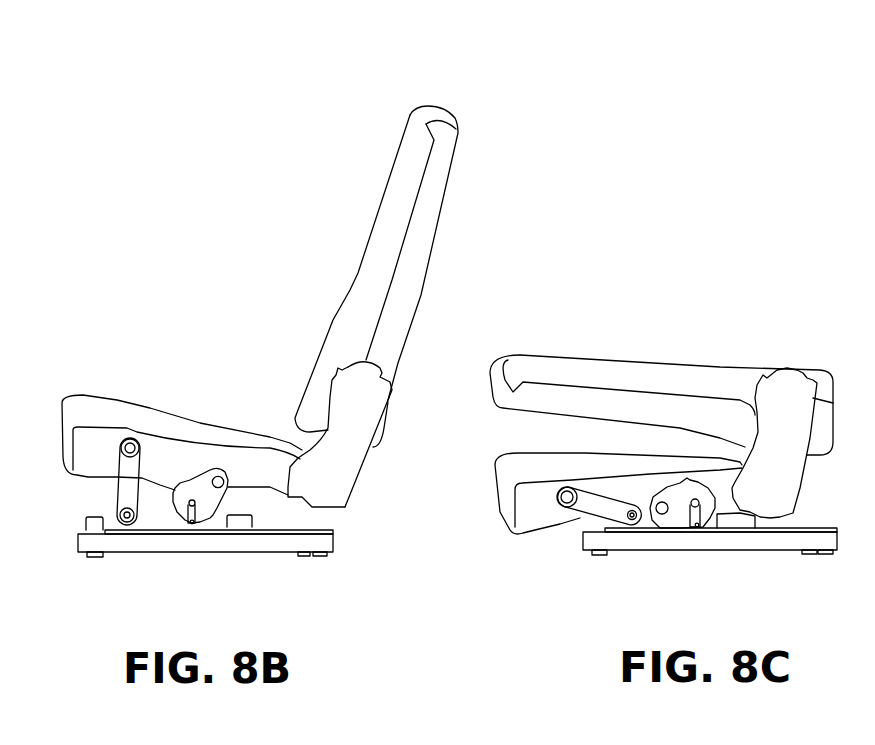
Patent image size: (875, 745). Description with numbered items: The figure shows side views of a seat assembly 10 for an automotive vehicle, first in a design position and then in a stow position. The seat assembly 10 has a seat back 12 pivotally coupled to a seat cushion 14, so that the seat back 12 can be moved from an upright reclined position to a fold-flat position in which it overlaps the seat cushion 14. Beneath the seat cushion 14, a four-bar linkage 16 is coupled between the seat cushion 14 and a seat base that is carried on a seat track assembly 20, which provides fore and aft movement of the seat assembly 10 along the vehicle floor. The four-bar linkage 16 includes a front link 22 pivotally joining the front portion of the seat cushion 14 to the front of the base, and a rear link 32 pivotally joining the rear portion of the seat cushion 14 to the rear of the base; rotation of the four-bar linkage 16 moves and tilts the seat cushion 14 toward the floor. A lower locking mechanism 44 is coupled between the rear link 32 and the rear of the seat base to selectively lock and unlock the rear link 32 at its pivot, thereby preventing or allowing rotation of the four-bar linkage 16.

In FIG. 8B, the seat assembly 10 is at (226, 347).
In FIG. 8C, the seat assembly 10 is at (668, 318).
In FIG. 8B, the seat back 12 is at (442, 223).
In FIG. 8C, the seat back 12 is at (750, 365).
In FIG. 8B, the seat cushion 14 is at (63, 467).
In FIG. 8C, the seat cushion 14 is at (502, 512).
In FIG. 8B, the four-bar linkage 16 is at (156, 512).
In FIG. 8C, the four-bar linkage 16 is at (640, 522).
In FIG. 8B, the seat track assembly 20 is at (226, 568).
In FIG. 8C, the seat track assembly 20 is at (694, 576).
In FIG. 8B, the front link 22 is at (112, 502).
In FIG. 8C, the front link 22 is at (575, 512).
In FIG. 8B, the rear link 32 is at (228, 490).
In FIG. 8C, the rear link 32 is at (720, 493).
In FIG. 8B, the lower locking mechanism 44 is at (222, 514).
In FIG. 8C, the lower locking mechanism 44 is at (702, 527).